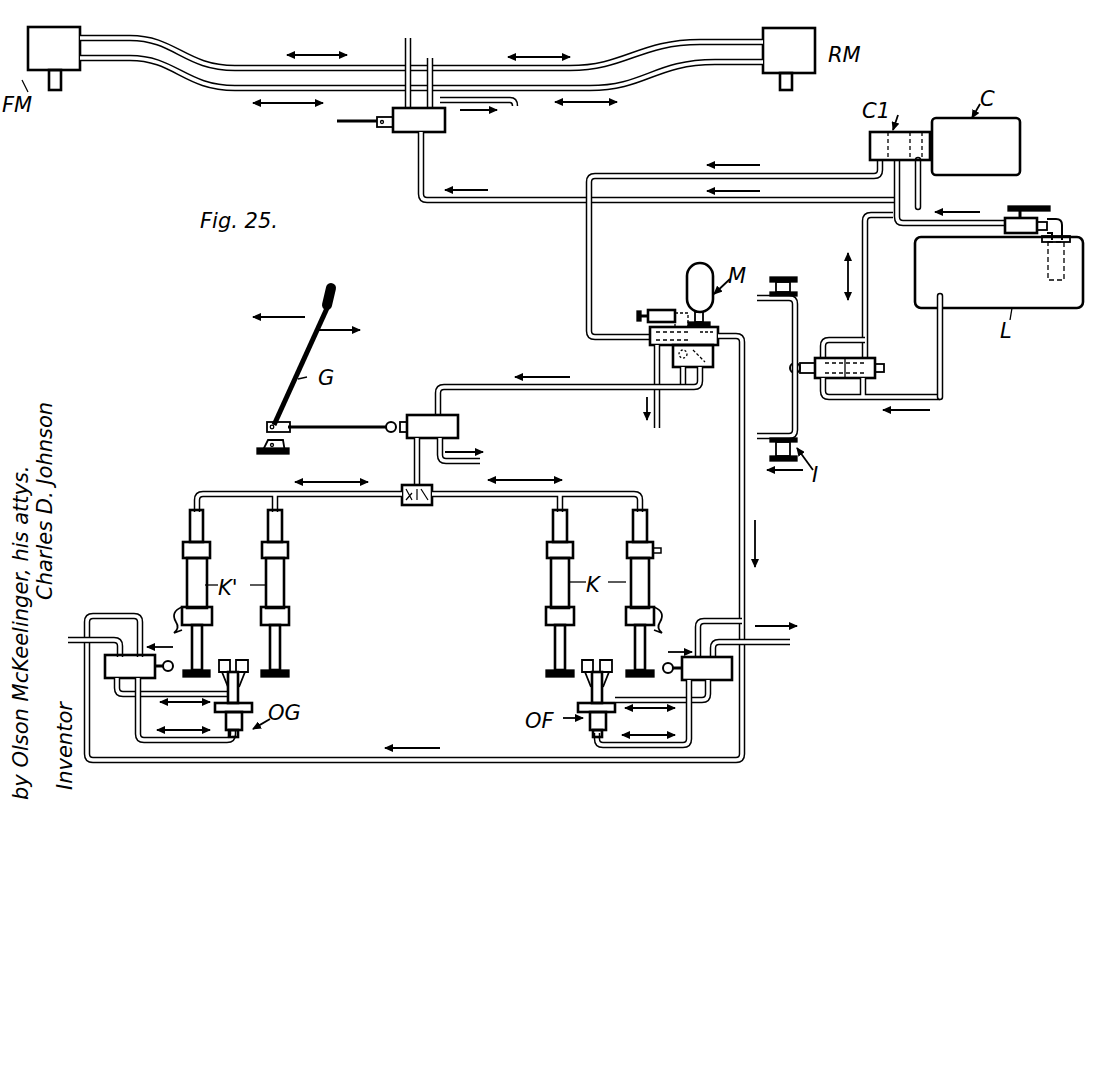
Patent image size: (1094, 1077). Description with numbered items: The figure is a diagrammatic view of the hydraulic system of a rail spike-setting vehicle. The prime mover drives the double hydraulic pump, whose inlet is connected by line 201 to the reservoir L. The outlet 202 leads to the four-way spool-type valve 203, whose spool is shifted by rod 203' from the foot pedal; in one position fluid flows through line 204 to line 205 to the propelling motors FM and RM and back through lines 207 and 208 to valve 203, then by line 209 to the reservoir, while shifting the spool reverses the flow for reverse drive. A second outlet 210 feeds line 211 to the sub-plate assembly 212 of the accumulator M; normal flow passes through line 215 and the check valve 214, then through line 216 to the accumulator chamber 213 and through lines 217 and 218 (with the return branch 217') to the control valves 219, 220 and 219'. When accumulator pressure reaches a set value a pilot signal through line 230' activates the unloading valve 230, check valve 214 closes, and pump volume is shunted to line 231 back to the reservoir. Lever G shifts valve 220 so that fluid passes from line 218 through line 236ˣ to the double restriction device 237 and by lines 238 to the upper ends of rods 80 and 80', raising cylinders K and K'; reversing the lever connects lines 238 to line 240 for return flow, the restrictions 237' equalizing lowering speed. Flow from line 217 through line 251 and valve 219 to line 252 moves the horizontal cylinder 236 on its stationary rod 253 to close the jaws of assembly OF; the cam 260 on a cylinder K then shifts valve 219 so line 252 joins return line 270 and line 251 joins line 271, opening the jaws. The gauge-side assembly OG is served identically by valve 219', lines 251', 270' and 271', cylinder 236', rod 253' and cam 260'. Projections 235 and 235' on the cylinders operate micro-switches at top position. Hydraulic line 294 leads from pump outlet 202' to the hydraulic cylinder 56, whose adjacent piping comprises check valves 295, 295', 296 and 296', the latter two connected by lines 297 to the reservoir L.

The inlet line 201 is at (905, 225).
The pump outlet 202 is at (659, 181).
The pump outlet 202' is at (953, 183).
The four-way spool-type valve 203 is at (435, 134).
The rod 203' is at (361, 138).
The line 204 is at (415, 75).
The line 205 is at (368, 67).
The lines 207 is at (215, 92).
The line 208 is at (406, 100).
The line 209 is at (505, 105).
The outlet 210 is at (870, 148).
The line 211 is at (640, 176).
The sub-plate assembly 212 is at (650, 344).
The accumulator chamber 213 is at (713, 302).
The check valve 214 is at (683, 372).
The line 215 is at (650, 365).
The line 216 is at (713, 357).
The line 217 is at (611, 548).
The line 217' is at (259, 765).
The line 218 is at (610, 391).
The control valve 219 is at (729, 674).
The control valve 219' is at (164, 691).
The control valve 220 is at (448, 427).
The unloading valve 230 is at (639, 307).
The pilot line 230' is at (662, 292).
The line 231 is at (658, 427).
The projection 235 is at (667, 599).
The projection 235' is at (176, 595).
The horizontal cylinder 236 is at (485, 591).
The horizontal cylinder 236' is at (264, 703).
The double restriction device 237 is at (423, 515).
The restrictions 237' is at (428, 514).
The lines 238 is at (250, 493).
The line 240 is at (444, 460).
The line 251 is at (717, 622).
The line 251' is at (113, 649).
The line 252 is at (698, 702).
The rod 253 is at (575, 760).
The rod 253' is at (266, 759).
The cam 260 is at (677, 602).
The cam 260' is at (163, 599).
The line 270 is at (778, 659).
The line 270' is at (85, 628).
The line 271 is at (668, 718).
The line 271' is at (161, 733).
The hydraulic line 294 is at (868, 275).
The check valve 295 is at (867, 337).
The check valve 295' is at (831, 330).
The check valve 296 is at (881, 384).
The check valve 296' is at (845, 402).
The lines 297 is at (943, 378).
The hydraulic cylinder 56 is at (880, 357).
The rods 80 is at (600, 526).
The rods 80' is at (236, 526).